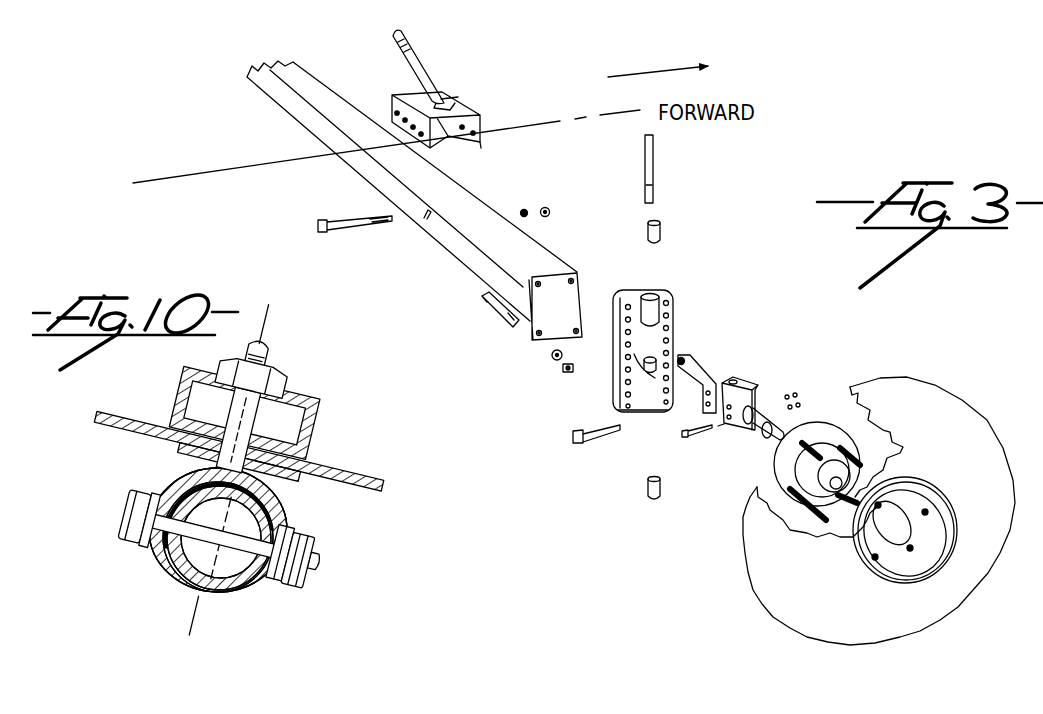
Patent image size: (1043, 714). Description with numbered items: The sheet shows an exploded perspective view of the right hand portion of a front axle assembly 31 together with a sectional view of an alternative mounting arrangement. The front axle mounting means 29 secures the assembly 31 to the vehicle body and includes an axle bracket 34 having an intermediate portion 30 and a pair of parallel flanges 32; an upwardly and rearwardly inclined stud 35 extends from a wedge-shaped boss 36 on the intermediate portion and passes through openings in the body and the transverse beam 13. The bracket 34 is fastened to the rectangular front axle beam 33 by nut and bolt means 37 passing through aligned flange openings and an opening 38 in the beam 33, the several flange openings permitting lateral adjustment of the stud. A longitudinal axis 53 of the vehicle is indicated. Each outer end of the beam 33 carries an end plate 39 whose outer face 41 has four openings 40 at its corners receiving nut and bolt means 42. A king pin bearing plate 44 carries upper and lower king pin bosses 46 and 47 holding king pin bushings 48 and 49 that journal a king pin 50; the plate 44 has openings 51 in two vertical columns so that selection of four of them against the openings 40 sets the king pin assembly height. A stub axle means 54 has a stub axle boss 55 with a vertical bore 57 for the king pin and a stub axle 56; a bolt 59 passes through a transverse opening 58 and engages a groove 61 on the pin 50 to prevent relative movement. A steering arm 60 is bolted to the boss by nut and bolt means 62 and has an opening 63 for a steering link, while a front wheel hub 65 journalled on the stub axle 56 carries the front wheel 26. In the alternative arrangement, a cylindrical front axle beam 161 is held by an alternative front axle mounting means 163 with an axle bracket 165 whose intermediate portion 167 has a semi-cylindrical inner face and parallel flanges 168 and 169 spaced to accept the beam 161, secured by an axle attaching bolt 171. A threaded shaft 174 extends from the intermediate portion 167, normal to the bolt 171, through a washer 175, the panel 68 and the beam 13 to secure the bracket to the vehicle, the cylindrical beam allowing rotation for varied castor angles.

In FIG. 10, the transverse beam 13 is at (300, 397).
In FIG. 3, the front wheel 26 is at (868, 646).
In FIG. 3, the front axle mounting means 29 is at (454, 62).
In FIG. 3, the intermediate portion 30 is at (410, 95).
In FIG. 3, the front axle assembly 31 is at (418, 334).
In FIG. 3, the parallel flanges 32 is at (483, 133).
In FIG. 3, the front axle beam 33 is at (304, 118).
In FIG. 3, the axle bracket 34 is at (472, 101).
In FIG. 3, the stud 35 is at (412, 55).
In FIG. 3, the wedge-shaped boss 36 is at (448, 100).
In FIG. 3, the nut and bolt means 37 is at (347, 225).
In FIG. 3, the opening 38 is at (426, 218).
In FIG. 3, the end plate 39 is at (577, 295).
In FIG. 3, the openings 40 is at (537, 278).
In FIG. 3, the outer face 41 is at (565, 322).
In FIG. 3, the nut and bolt means 42 is at (492, 305).
In FIG. 3, the king pin bearing plate 44 is at (680, 309).
In FIG. 3, the upper king pin boss 46 is at (653, 312).
In FIG. 3, the lower king pin boss 47 is at (643, 373).
In FIG. 3, the king pin bushing 48 is at (657, 232).
In FIG. 3, the king pin bushing 49 is at (646, 482).
In FIG. 3, the king pin 50 is at (653, 157).
In FIG. 3, the openings 51 is at (633, 412).
In FIG. 3, the longitudinal axis 53 is at (227, 170).
In FIG. 3, the stub axle means 54 is at (777, 371).
In FIG. 3, the stub axle boss 55 is at (745, 430).
In FIG. 3, the stub axle 56 is at (763, 430).
In FIG. 3, the bore 57 is at (760, 362).
In FIG. 3, the transverse opening 58 is at (723, 427).
In FIG. 3, the bolt 59 is at (686, 437).
In FIG. 3, the steering arm 60 is at (702, 378).
In FIG. 3, the groove 61 is at (653, 187).
In FIG. 3, the nut and bolt means 62 is at (600, 437).
In FIG. 3, the opening 63 is at (683, 358).
In FIG. 3, the front wheel hub 65 is at (820, 430).
In FIG. 10, the panel 68 is at (123, 415).
In FIG. 10, the alternative front axle beam 161 is at (188, 583).
In FIG. 10, the alternative front axle mounting means 163 is at (305, 513).
In FIG. 10, the alternative axle bracket 165 is at (294, 498).
In FIG. 10, the intermediate portion 167 is at (163, 486).
In FIG. 10, the flange 168 is at (143, 560).
In FIG. 10, the flange 169 is at (272, 590).
In FIG. 10, the axle attaching bolt 171 is at (125, 523).
In FIG. 10, the threaded shaft 174 is at (275, 350).
In FIG. 10, the washer 175 is at (173, 453).